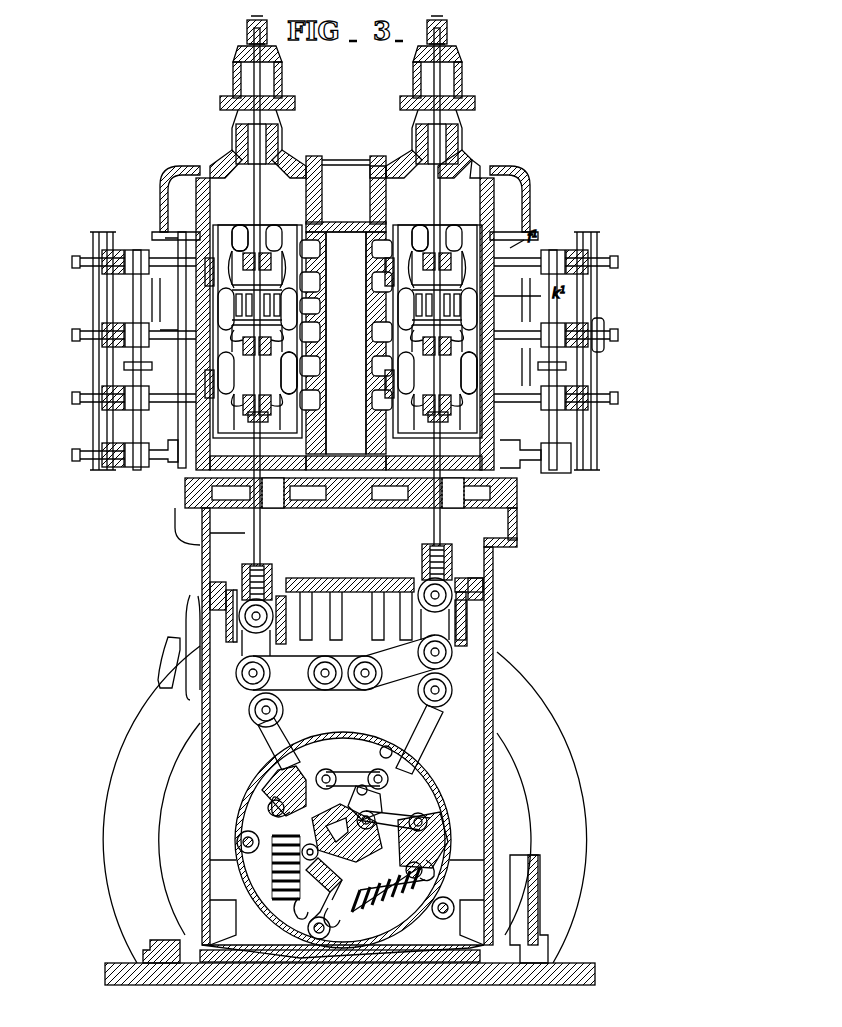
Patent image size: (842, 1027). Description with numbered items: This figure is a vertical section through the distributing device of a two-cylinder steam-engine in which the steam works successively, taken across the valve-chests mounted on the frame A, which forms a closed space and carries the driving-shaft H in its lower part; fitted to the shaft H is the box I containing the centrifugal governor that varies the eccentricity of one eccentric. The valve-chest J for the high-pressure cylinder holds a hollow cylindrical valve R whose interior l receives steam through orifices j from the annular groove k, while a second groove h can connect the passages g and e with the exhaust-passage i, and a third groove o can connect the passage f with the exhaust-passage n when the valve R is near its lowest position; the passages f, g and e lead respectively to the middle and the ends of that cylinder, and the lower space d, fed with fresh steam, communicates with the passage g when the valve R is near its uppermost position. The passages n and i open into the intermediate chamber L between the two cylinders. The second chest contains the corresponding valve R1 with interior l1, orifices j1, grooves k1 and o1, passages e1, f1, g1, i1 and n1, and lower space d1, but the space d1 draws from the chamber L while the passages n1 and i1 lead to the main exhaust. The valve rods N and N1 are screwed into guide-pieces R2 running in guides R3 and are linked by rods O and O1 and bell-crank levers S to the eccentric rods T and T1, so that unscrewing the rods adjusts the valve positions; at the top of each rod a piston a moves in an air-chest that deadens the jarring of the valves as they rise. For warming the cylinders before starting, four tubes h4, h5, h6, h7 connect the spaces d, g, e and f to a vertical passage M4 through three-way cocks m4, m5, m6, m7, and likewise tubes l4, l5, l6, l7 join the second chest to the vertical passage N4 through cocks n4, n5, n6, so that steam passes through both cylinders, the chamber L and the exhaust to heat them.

The piston a is at (243, 70).
The hollow cylindrical valve R is at (198, 170).
The hollow cylindrical valve R1 is at (508, 172).
The valve-chest J is at (178, 242).
The annular groove o is at (240, 238).
The annular groove o1 is at (422, 230).
The interior of hollow valve l is at (253, 331).
The interior of hollow valve l1 is at (433, 331).
The exhaust-passage n is at (310, 248).
The exhaust-passage n1 is at (372, 248).
The passage f is at (320, 282).
The passage f1 is at (380, 292).
The intermediate chamber L is at (346, 343).
The annular groove k is at (310, 305).
The annular groove k1 is at (460, 370).
The passage e is at (310, 332).
The passage e1 is at (382, 332).
The exhaust-passage i is at (310, 366).
The exhaust-passage i1 is at (372, 366).
The passage g is at (320, 400).
The passage g1 is at (372, 410).
The lower space of valve-chest d is at (292, 456).
The lower space of valve-chest d1 is at (400, 456).
The annular groove h is at (292, 374).
The tube h7 is at (156, 268).
The tube h6 is at (156, 341).
The tube h5 is at (158, 396).
The tube h4 is at (166, 464).
The orifices j is at (210, 300).
The orifices j1 is at (517, 301).
The three-way cock m7 is at (72, 262).
The three-way cock m6 is at (72, 335).
The three-way cock m5 is at (72, 398).
The three-way cock m4 is at (72, 455).
The vertical passage M4 is at (135, 450).
The three-way cock n6 is at (618, 262).
The three-way cock n5 is at (618, 335).
The three-way cock n4 is at (618, 398).
The vertical passage N4 is at (572, 450).
The tube l7 is at (527, 300).
The tube l6 is at (527, 367).
The tube l5 is at (536, 398).
The tube l4 is at (536, 470).
The valve rod N is at (252, 552).
The valve rod N1 is at (446, 556).
The guide-piece R2 is at (274, 578).
The guide R3 is at (228, 628).
The rod O is at (236, 668).
The rod O1 is at (446, 668).
The bell-crank lever S is at (344, 662).
The eccentric rod T is at (280, 748).
The eccentric rod T1 is at (414, 740).
The governor box I is at (262, 790).
The driving-shaft H is at (373, 788).
The frame A is at (196, 818).